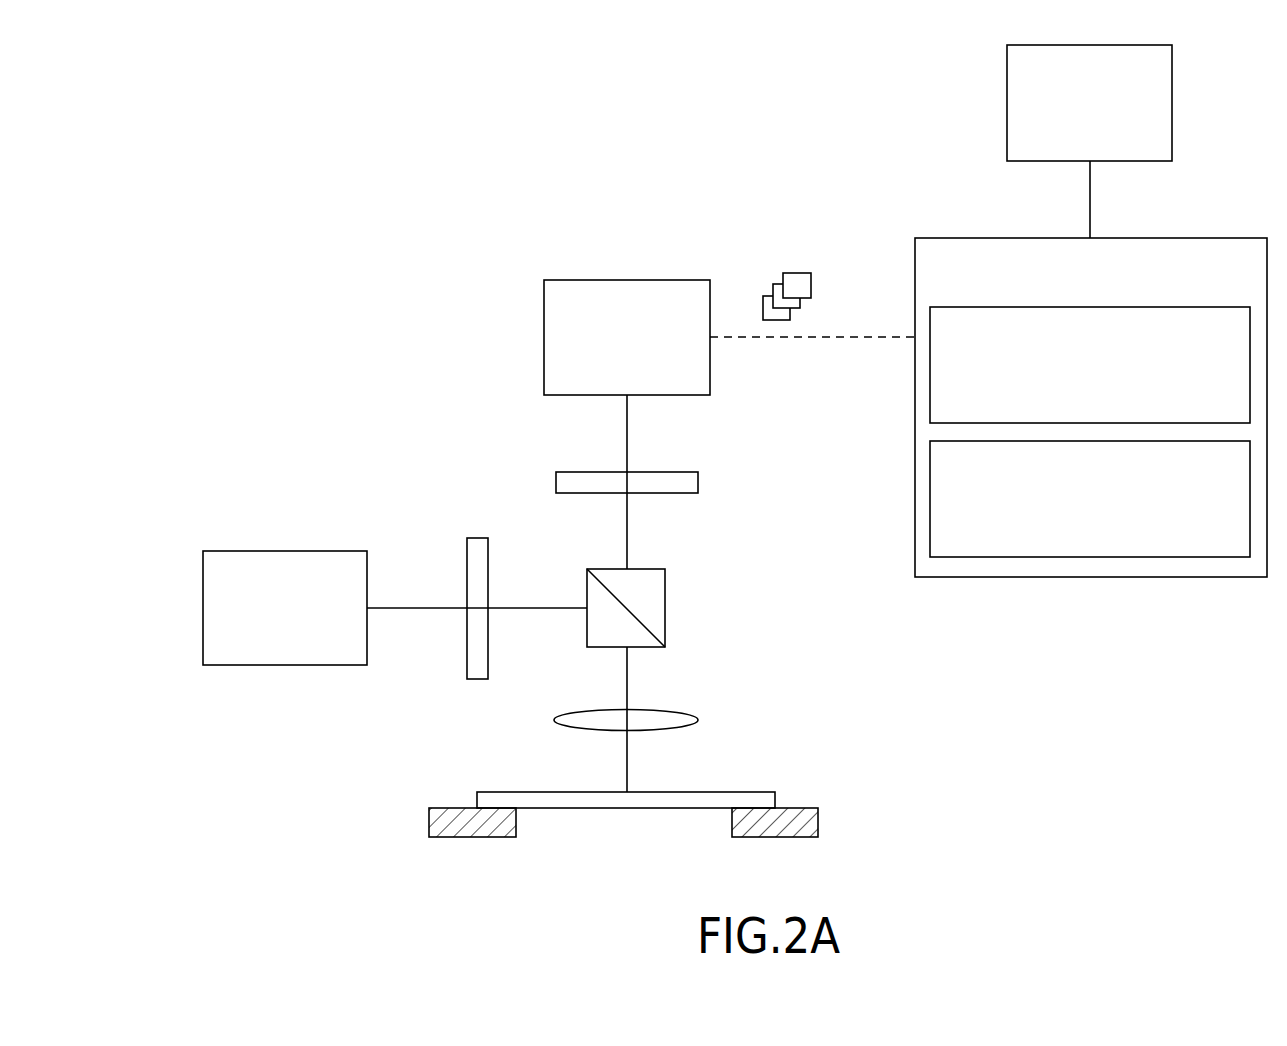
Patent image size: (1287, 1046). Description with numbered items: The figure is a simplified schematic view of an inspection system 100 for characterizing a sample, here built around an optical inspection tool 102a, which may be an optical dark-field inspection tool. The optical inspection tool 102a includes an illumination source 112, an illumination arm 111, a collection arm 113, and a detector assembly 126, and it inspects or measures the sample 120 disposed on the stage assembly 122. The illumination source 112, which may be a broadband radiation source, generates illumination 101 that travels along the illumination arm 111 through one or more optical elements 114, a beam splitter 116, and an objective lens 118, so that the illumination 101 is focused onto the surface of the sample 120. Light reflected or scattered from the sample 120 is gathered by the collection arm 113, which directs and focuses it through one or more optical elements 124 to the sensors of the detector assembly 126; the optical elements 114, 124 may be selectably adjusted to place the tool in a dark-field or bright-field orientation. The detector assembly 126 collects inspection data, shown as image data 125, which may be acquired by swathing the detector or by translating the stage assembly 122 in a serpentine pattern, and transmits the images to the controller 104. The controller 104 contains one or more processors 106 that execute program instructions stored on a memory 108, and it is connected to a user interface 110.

The inspection system 100 is at (353, 163).
The optical inspection tool 102a is at (298, 340).
The controller 104 is at (958, 266).
The processors 106 is at (977, 335).
The memory 108 is at (977, 470).
The user interface 110 is at (1052, 72).
The illumination arm 111 is at (416, 506).
The illumination source 112 is at (303, 620).
The illumination 101 is at (422, 610).
The collection arm 113 is at (758, 648).
The optical elements 114 is at (476, 681).
The beam splitter 116 is at (667, 607).
The objective lens 118 is at (680, 713).
The sample 120 is at (742, 792).
The stage assembly 122 is at (818, 818).
The optical elements 124 is at (680, 475).
The image data 125 is at (749, 284).
The detector assembly 126 is at (645, 350).